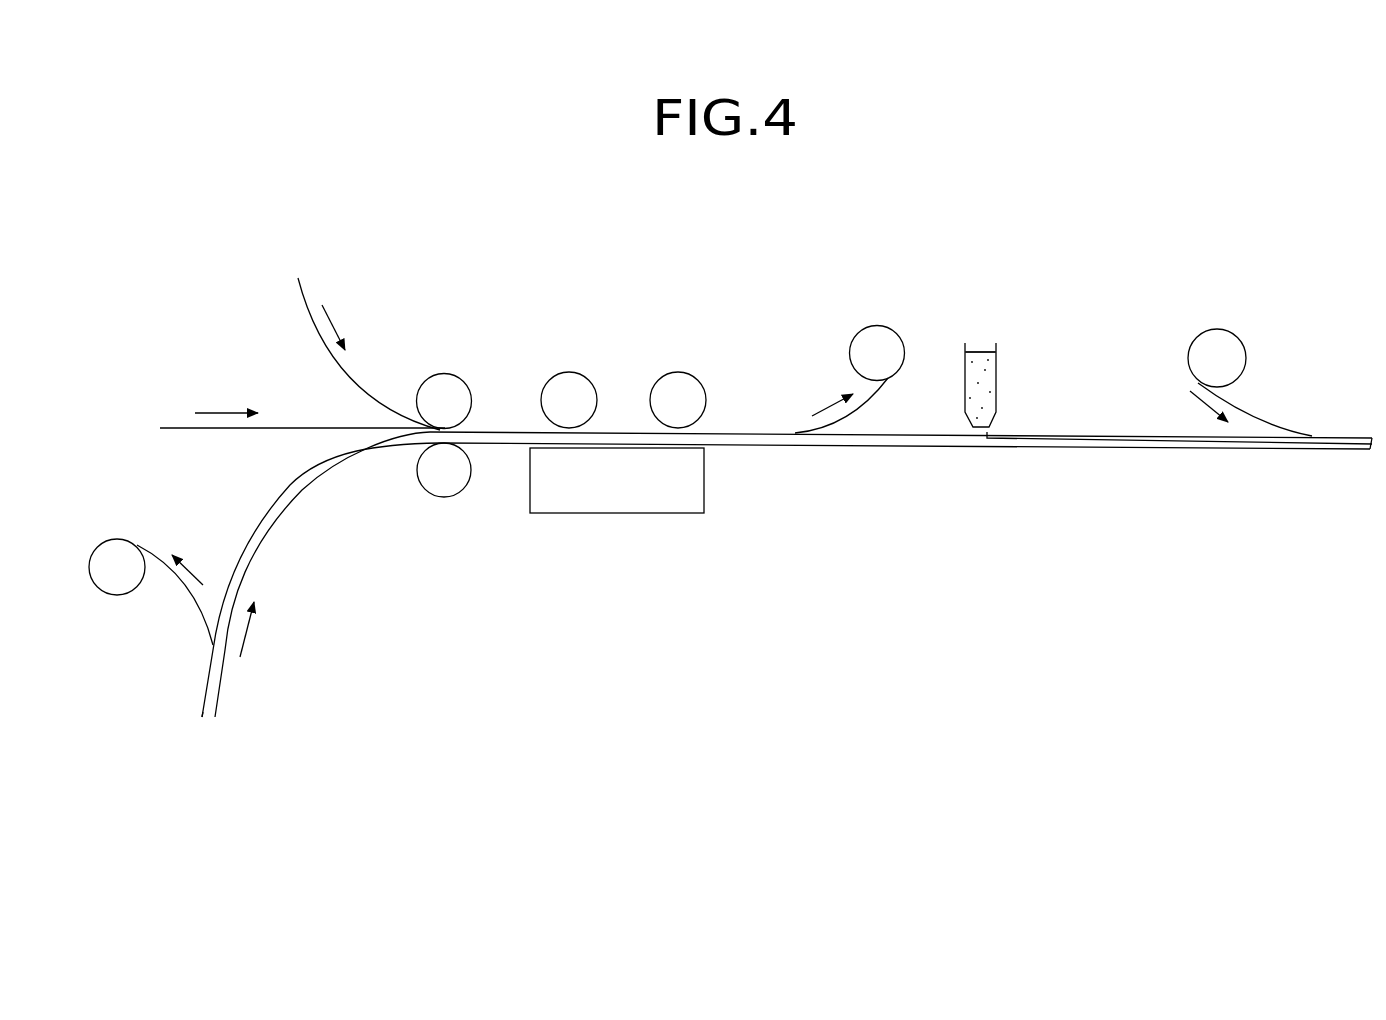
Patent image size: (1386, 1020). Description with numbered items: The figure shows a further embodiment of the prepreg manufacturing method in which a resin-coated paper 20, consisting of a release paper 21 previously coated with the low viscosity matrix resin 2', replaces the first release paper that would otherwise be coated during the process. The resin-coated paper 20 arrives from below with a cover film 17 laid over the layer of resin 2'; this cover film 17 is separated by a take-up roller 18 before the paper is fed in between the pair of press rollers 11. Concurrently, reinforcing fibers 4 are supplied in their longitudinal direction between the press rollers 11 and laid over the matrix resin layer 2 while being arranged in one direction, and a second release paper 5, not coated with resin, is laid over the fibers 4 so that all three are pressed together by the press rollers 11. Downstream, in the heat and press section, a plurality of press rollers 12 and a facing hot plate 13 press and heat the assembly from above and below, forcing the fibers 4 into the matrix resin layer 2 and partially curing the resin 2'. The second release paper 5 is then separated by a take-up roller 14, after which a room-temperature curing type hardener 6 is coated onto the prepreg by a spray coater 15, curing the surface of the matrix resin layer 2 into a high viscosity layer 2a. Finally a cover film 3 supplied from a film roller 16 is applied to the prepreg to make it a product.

The matrix resin layer 2 is at (901, 476).
The high viscosity layer 2a is at (1112, 433).
The resin 2' is at (321, 574).
The cover film 3 is at (1280, 428).
The reinforcing fibers 4 is at (185, 428).
The second release paper 5 is at (310, 313).
The room-temperature curing type hardener 6 is at (988, 398).
The press rollers 11 is at (441, 384).
The press rollers 12 is at (571, 383).
The hot plate 13 is at (620, 500).
The take-up roller 14 is at (870, 338).
The spray coater 15 is at (965, 362).
The film roller 16 is at (1193, 362).
The cover film 17 is at (183, 590).
The take-up roller 18 is at (117, 548).
The resin-coated paper 20 is at (213, 700).
The release paper 21 is at (252, 559).